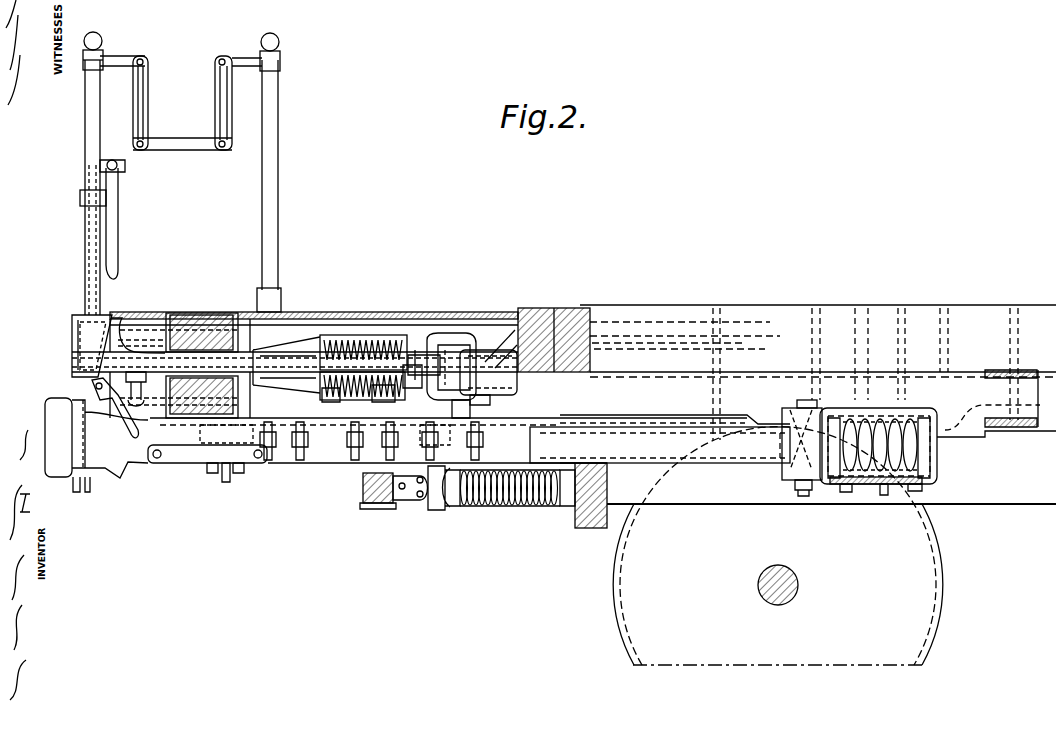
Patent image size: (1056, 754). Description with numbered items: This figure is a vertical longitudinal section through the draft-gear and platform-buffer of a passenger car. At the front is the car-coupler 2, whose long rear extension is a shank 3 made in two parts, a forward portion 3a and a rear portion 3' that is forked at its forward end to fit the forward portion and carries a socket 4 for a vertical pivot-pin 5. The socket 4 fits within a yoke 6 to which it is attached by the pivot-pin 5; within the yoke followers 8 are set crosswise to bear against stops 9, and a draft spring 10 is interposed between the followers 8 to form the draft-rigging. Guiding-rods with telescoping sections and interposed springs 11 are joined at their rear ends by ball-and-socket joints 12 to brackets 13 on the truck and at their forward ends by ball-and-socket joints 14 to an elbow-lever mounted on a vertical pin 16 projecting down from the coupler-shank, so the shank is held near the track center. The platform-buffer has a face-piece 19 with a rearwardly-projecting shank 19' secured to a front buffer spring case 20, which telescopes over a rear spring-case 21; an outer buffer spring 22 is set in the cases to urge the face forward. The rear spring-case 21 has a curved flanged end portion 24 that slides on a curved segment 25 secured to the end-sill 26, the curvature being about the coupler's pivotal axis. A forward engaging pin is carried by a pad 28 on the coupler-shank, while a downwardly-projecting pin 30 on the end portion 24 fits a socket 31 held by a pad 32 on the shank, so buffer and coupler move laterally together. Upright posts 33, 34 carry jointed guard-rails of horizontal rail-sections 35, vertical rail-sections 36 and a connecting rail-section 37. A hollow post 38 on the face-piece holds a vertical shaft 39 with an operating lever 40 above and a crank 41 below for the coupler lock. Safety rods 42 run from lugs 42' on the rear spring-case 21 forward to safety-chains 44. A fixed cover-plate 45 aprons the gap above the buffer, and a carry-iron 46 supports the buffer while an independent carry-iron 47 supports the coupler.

The car-coupler 2 is at (48, 410).
The shank 3 is at (431, 387).
The forward portion of coupler-shank 3a is at (358, 441).
The rear portion of coupler-shank 3' is at (660, 445).
The socket 4 is at (792, 470).
The vertical pivot-pin 5 is at (805, 400).
The yoke 6 is at (874, 418).
The followers 8 is at (840, 480).
The stops 9 is at (838, 478).
The draft spring 10 is at (868, 478).
The springs of guiding-rods 11 is at (505, 498).
The ball-and-socket joints 12 is at (540, 505).
The brackets 13 is at (580, 500).
The ball-and-socket joints 14 is at (418, 500).
The vertical pin 16 is at (380, 504).
The face-piece 19 is at (76, 345).
The buffer shank 19' is at (138, 337).
The front buffer spring case 20 is at (338, 397).
The rear spring-case 21 is at (415, 389).
The outer buffer spring 22 is at (382, 397).
The curved flanged end portion 24 is at (455, 338).
The curved segment 25 is at (492, 342).
The end-sill 26 is at (545, 310).
The pad 28 is at (288, 458).
The downwardly-projecting pin 30 is at (490, 398).
The socket 31 is at (470, 408).
The pad 32 is at (483, 432).
The upright post 33 is at (278, 232).
The upright post 34 is at (85, 137).
The horizontal rail-sections 35 is at (250, 62).
The vertical rail-sections 36 is at (215, 103).
The connecting rail-section 37 is at (190, 150).
The hollow post 38 is at (83, 262).
The vertical shaft 39 is at (89, 238).
The operating lever 40 is at (118, 220).
The crank 41 is at (100, 403).
The safety rods 42 is at (330, 343).
The lugs 42' is at (424, 333).
The safety-chains 44 is at (145, 402).
The cover-plate 45 is at (174, 314).
The carry-iron of buffer 46 is at (198, 400).
The carry-iron of coupler 47 is at (224, 482).